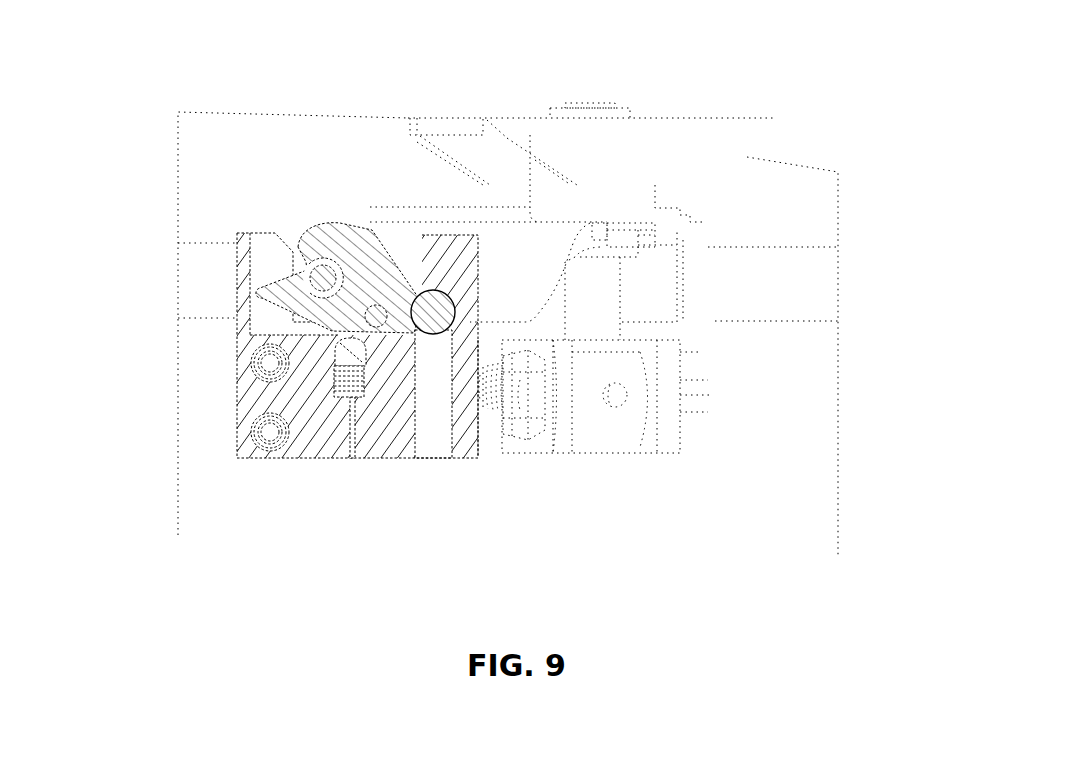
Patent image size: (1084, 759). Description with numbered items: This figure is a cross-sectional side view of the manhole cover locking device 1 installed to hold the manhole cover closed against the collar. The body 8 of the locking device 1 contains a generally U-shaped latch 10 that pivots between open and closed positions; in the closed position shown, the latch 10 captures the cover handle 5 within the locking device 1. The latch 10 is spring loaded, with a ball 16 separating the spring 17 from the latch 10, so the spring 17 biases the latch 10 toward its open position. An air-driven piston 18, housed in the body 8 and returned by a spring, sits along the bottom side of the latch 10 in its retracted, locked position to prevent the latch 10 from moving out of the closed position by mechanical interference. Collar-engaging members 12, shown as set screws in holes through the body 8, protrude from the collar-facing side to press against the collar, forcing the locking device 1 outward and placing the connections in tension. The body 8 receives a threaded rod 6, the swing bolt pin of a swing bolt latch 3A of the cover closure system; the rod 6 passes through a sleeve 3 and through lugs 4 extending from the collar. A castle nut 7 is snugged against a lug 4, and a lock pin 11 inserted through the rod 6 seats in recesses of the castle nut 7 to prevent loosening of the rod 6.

The manhole cover locking device 1 is at (252, 494).
The swing bolt latch 3A is at (690, 103).
The sleeve 3 is at (603, 433).
The lug 4 is at (558, 447).
The handle 5 is at (313, 282).
The rod 6 is at (710, 382).
The castle nut 7 is at (530, 425).
The body 8 is at (300, 433).
The latch 10 is at (318, 225).
The lock pin 11 is at (502, 425).
The collar-engaging member 12 is at (255, 370).
The ball 16 is at (353, 355).
The spring 17 is at (353, 382).
The piston 18 is at (423, 310).